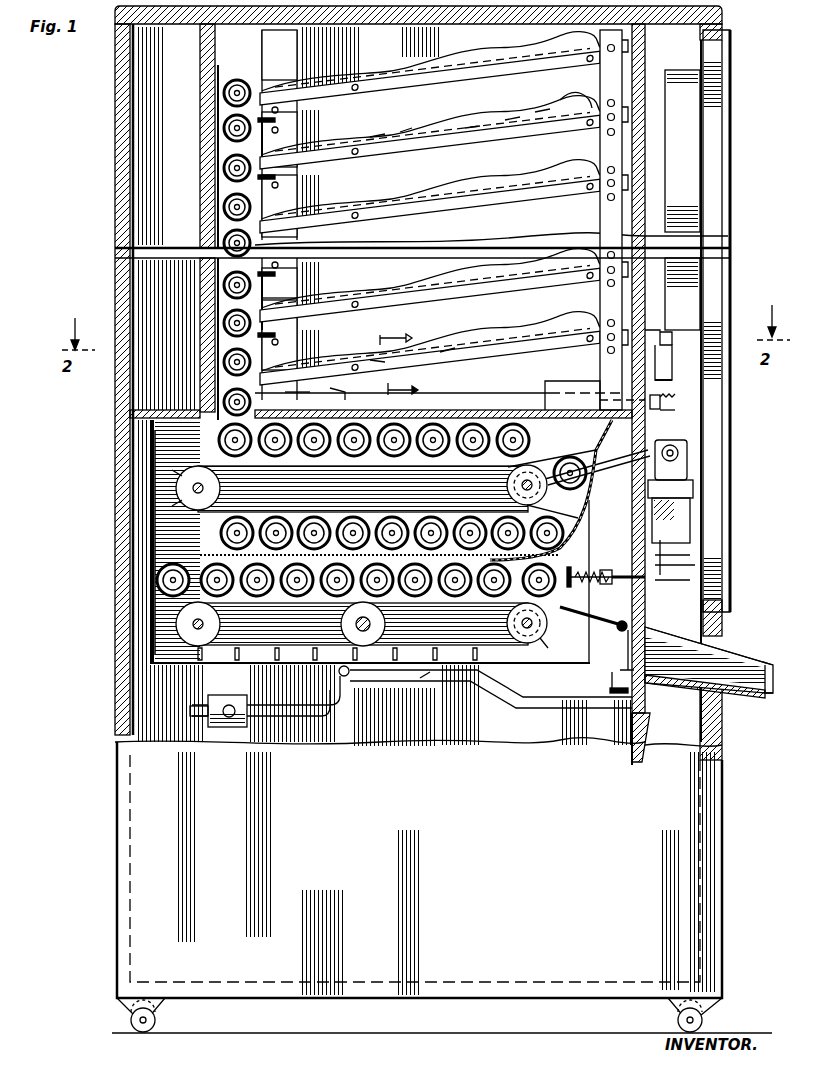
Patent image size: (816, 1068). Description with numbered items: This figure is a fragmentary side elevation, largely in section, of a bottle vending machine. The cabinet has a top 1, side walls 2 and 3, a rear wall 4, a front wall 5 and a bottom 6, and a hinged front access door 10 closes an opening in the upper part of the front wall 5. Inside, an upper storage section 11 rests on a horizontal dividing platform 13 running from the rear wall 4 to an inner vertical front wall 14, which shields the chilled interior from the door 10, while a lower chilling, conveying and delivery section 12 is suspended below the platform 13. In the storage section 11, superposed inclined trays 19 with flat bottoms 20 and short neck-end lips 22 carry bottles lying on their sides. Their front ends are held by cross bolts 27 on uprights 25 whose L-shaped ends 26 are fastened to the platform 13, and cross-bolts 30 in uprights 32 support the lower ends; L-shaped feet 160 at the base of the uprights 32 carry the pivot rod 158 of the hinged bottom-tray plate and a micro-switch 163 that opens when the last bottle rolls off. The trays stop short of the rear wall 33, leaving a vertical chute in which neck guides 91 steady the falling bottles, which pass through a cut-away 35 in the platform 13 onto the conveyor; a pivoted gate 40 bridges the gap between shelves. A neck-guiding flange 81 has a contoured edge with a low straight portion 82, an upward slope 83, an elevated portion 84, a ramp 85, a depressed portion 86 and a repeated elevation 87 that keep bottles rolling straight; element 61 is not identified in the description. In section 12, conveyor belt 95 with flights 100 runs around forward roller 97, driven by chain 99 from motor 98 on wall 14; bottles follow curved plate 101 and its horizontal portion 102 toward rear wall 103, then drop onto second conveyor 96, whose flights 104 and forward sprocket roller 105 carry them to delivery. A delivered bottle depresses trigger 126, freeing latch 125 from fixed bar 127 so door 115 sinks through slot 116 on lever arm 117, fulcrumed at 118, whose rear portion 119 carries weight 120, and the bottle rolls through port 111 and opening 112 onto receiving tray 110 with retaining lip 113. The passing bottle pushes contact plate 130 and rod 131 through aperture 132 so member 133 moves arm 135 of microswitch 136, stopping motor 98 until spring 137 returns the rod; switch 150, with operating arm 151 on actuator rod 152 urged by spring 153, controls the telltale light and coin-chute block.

The top 1 is at (462, 26).
The side wall 2 is at (130, 125).
The side wall 3 is at (405, 364).
The rear wall 4 is at (125, 205).
The front wall 5 is at (715, 30).
The bottom 6 is at (521, 990).
The front access door 10 is at (732, 190).
The upper storage section 11 is at (360, 30).
The lower chilling, conveying and delivery section 12 is at (379, 510).
The horizontal dividing platform 13 is at (470, 405).
The inner vertical front wall 14 is at (640, 45).
The shelves or trays 19 is at (458, 148).
The flat bottom 20 is at (505, 296).
The upstanding lip 22 is at (545, 343).
The upright 25 is at (600, 147).
The L-shaped end 26 is at (583, 381).
The horizontal cross bolt 27 is at (610, 183).
The cross-bolt 30 is at (296, 235).
The upright 32 is at (279, 135).
The rear wall of upper section 33 is at (200, 215).
The cut-away 35 is at (155, 440).
The pivoted gate 40 is at (265, 148).
The article package 61 is at (405, 130).
The flange 81 is at (450, 350).
The straight portion of minimum height 82 is at (590, 58).
The upwardly sloped portion 83 is at (586, 104).
The elevated straight portion 84 is at (540, 110).
The downwardly inclined ramp 85 is at (512, 118).
The depressed straight portion 86 is at (472, 128).
The repeated elevated portion 87 is at (375, 135).
The vertical rail or guide member 91 is at (212, 252).
The conveyor belt 95 is at (460, 510).
The second conveyor belt 96 is at (180, 488).
The forward roller 97 is at (510, 484).
The drive motor 98 is at (688, 458).
The chain 99 is at (605, 460).
The flights 100 is at (545, 455).
The curved plate 101 is at (592, 540).
The horizontal portion 102 is at (155, 540).
The rear wall of section 103 is at (152, 500).
The flights 104 is at (477, 674).
The forward sprocket roller 105 is at (522, 664).
The receiving tray 110 is at (740, 698).
The delivery port 111 is at (722, 612).
The opening 112 is at (735, 655).
The terminal retaining lip 113 is at (772, 665).
The door 115 is at (640, 712).
The slot 116 is at (648, 745).
The lever arm 117 is at (422, 678).
The fulcrum 118 is at (357, 676).
The rearwardly extending portion 119 is at (300, 722).
The weight 120 is at (232, 730).
The latch 125 is at (628, 650).
The trigger 126 is at (615, 605).
The fixed bar 127 is at (612, 680).
The plate 130 is at (572, 575).
The rod 131 is at (690, 580).
The aperture 132 is at (695, 565).
The rigid member 133 is at (690, 555).
The arm 135 is at (665, 548).
The microswitch 136 is at (690, 515).
The spring 137 is at (605, 570).
The switch 150 is at (672, 360).
The operating arm 151 is at (672, 381).
The actuator rod 152 is at (660, 400).
The spring 153 is at (660, 410).
The pivot rod 158 is at (338, 390).
The L-shaped foot 160 is at (378, 360).
The micro-switch 163 is at (290, 390).